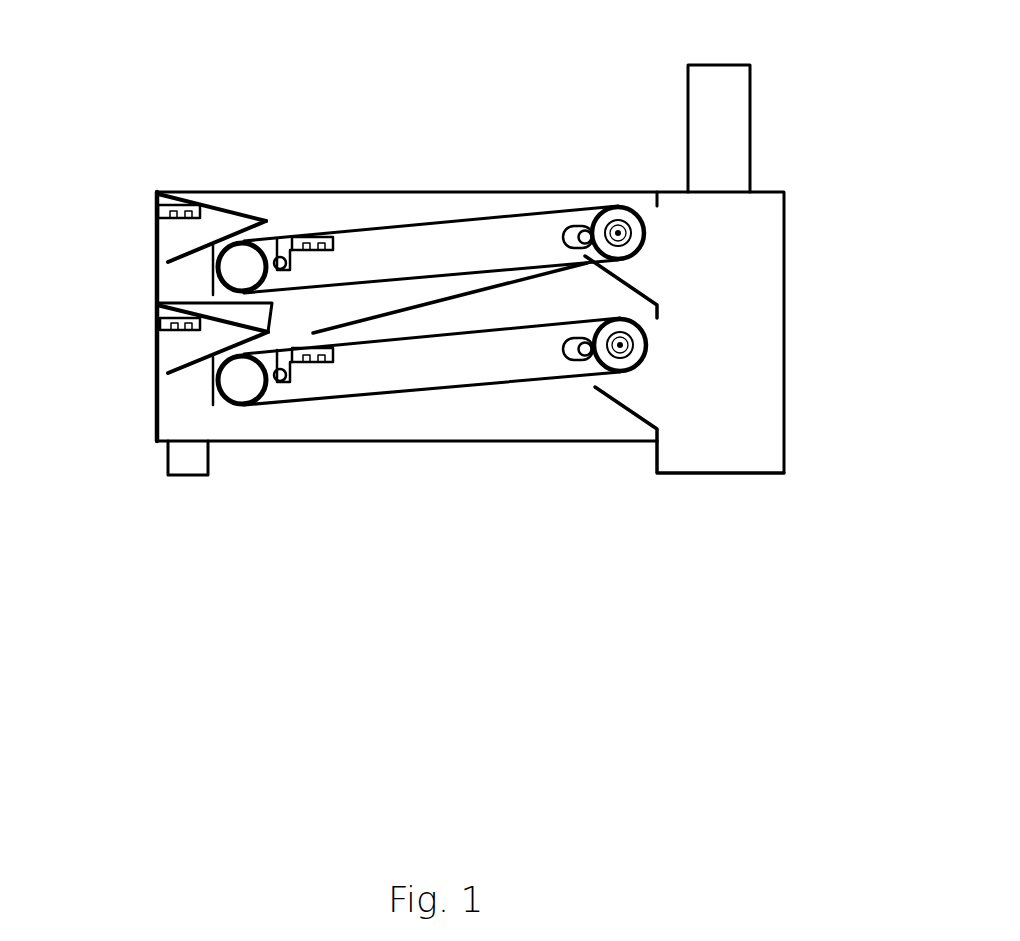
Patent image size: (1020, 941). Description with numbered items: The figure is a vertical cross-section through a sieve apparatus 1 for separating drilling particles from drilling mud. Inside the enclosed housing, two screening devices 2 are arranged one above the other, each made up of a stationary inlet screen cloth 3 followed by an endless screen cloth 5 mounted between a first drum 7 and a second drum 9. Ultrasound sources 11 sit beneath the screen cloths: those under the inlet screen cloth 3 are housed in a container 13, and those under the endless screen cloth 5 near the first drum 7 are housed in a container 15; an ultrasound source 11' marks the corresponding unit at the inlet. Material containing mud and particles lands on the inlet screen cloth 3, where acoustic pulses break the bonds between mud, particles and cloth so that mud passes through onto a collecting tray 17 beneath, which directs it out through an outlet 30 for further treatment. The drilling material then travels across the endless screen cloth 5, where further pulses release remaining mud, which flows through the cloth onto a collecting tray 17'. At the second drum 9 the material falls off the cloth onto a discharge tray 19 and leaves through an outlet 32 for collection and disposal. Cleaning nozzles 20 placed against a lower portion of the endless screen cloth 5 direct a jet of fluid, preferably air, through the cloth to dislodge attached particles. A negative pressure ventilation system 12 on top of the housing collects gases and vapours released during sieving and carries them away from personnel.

The sieve apparatus 1 is at (145, 127).
The screening device 2 is at (132, 281).
The stationary inlet screen cloth 3 is at (230, 212).
The endless screen cloth 5 is at (437, 222).
The first drum 7 is at (210, 293).
The second drum 9 is at (596, 212).
The ultrasound source 11 is at (313, 191).
The sensor at inlet 11' is at (187, 175).
The negative pressure ventilation system 12 is at (688, 88).
The container 13 is at (160, 214).
The container 15 is at (350, 238).
The collecting tray 17 is at (163, 241).
The collecting tray 17' is at (450, 233).
The discharge tray 19 is at (638, 288).
The cleaning nozzle 20 is at (280, 256).
The outlet 30 is at (183, 478).
The outlet 32 is at (707, 478).